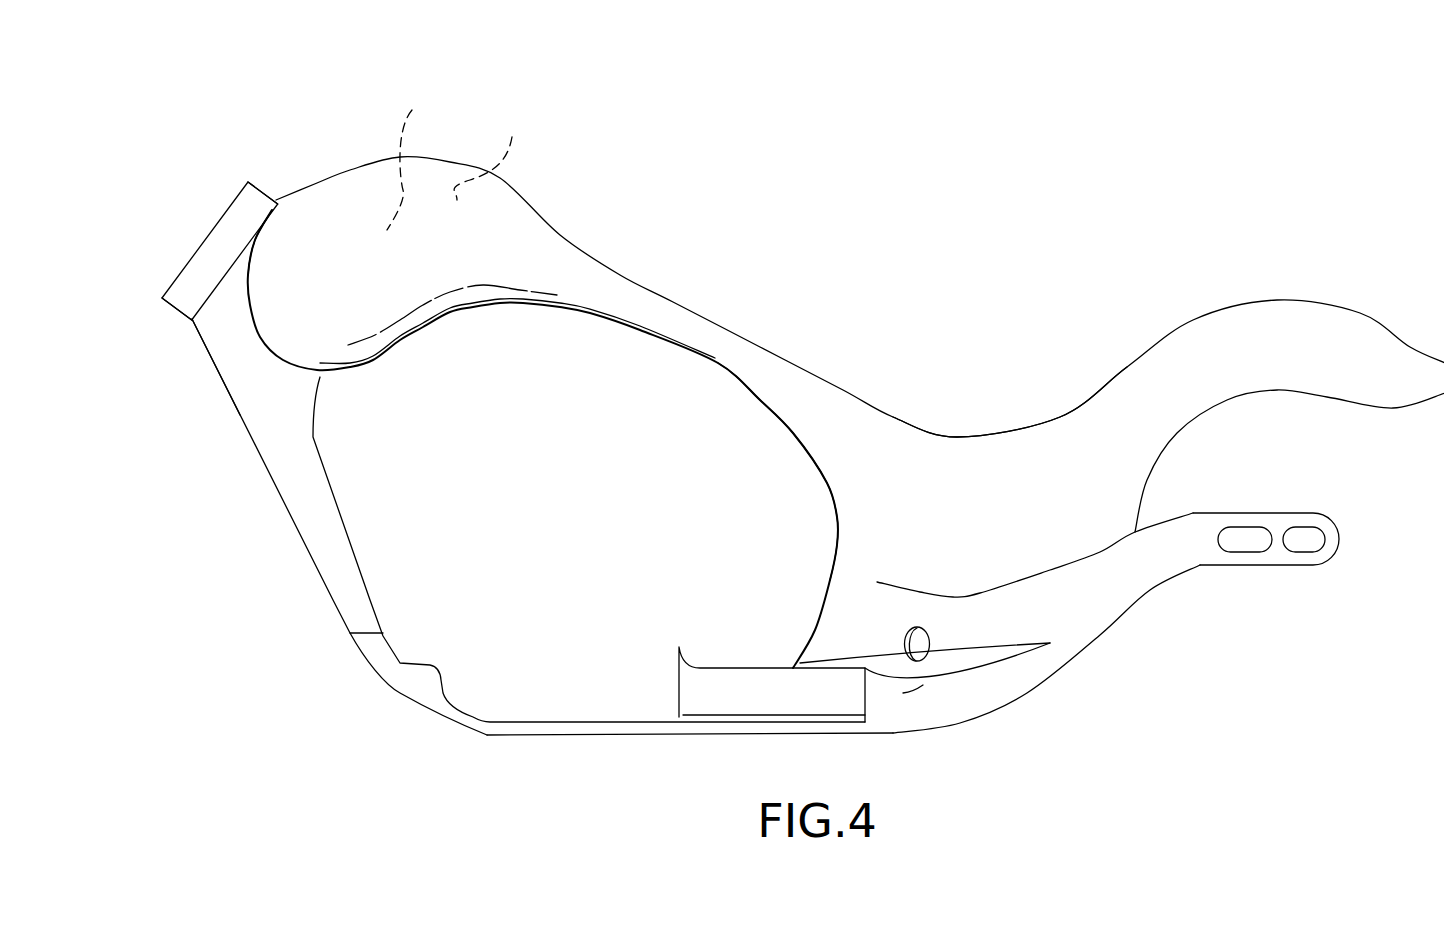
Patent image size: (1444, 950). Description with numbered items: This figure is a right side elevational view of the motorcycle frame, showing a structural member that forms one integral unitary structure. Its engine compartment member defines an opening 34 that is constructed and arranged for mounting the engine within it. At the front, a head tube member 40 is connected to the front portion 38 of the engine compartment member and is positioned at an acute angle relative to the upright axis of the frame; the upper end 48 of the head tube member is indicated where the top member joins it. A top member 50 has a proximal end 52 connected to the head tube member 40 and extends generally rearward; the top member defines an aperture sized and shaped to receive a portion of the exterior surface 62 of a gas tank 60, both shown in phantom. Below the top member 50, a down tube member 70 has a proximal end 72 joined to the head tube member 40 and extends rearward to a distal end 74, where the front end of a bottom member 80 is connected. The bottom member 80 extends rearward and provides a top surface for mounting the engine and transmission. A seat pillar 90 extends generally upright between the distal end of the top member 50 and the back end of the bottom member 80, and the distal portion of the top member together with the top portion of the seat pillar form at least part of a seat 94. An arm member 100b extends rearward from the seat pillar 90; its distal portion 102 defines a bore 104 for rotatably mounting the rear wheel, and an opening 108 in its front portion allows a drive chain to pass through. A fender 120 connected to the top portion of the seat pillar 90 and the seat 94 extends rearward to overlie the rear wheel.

The opening 34 is at (548, 496).
The front portion 38 is at (227, 287).
The head tube member 40 is at (207, 232).
The upper end of bracket 48 is at (250, 183).
The top member 50 is at (673, 302).
The proximal end 52 is at (287, 240).
The gas tank 60 is at (490, 153).
The exterior surface 62 is at (408, 154).
The down tube member 70 is at (278, 486).
The proximal end 72 is at (227, 323).
The distal end 74 is at (383, 634).
The bottom member 80 is at (588, 737).
The seat pillar 90 is at (850, 532).
The seat 94 is at (967, 435).
The arm member 100b is at (1250, 565).
The distal portion 102 is at (1283, 513).
The bore 104 is at (1308, 555).
The opening 108 is at (917, 630).
The fender 120 is at (1277, 300).